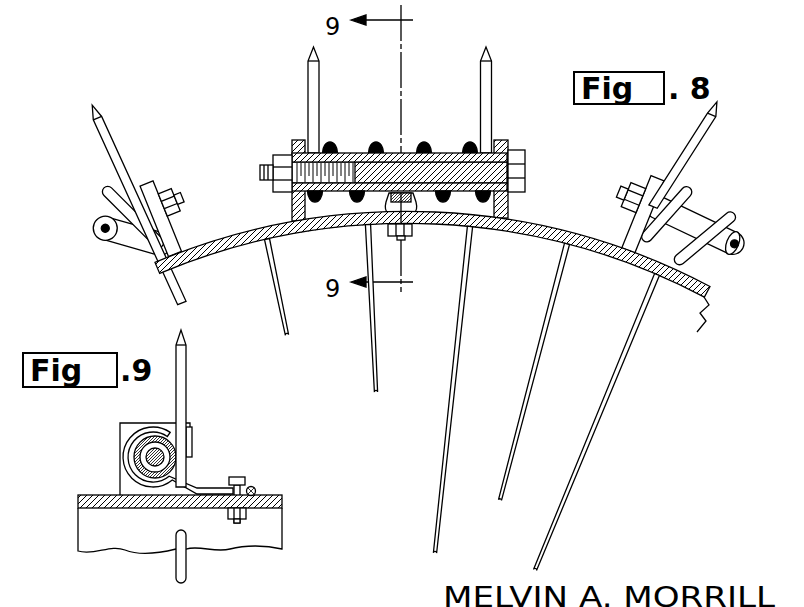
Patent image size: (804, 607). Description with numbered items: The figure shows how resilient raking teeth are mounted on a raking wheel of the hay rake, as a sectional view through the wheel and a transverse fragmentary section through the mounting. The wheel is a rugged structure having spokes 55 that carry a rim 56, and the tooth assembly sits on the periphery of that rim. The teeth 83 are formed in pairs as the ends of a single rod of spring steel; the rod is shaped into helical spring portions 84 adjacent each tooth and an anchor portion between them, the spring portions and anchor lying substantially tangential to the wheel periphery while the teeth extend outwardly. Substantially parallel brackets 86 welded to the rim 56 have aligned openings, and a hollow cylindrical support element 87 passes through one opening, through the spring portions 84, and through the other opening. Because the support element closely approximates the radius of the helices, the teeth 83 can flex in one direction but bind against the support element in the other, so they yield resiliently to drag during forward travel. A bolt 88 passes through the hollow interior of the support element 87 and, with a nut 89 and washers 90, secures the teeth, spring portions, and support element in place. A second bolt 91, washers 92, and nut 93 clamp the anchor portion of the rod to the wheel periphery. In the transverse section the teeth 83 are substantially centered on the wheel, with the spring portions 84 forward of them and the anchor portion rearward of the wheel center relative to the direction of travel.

In FIG. 8, the spokes 55 is at (527, 388).
In FIG. 9, the spokes 55 is at (176, 574).
In FIG. 8, the rim 56 is at (600, 243).
In FIG. 9, the rim 56 is at (78, 504).
In FIG. 8, the resilient teeth 83 is at (308, 70).
In FIG. 9, the resilient teeth 83 is at (186, 356).
In FIG. 8, the helical spring portions 84 is at (401, 147).
In FIG. 9, the helical spring portions 84 is at (125, 454).
In FIG. 8, the bracket 86 is at (294, 141).
In FIG. 9, the bracket 86 is at (168, 424).
In FIG. 8, the hollow cylindrical support element 87 is at (445, 148).
In FIG. 9, the hollow cylindrical support element 87 is at (137, 434).
In FIG. 8, the bolt 88 is at (527, 172).
In FIG. 9, the bolt 88 is at (146, 460).
In FIG. 8, the nut 89 is at (276, 160).
In FIG. 8, the washers 90 is at (293, 203).
In FIG. 8, the second bolt 91 is at (405, 226).
In FIG. 9, the second bolt 91 is at (243, 477).
In FIG. 8, the washers 92 is at (386, 208).
In FIG. 9, the washers 92 is at (254, 487).
In FIG. 8, the nut 93 is at (397, 237).
In FIG. 9, the nut 93 is at (248, 515).